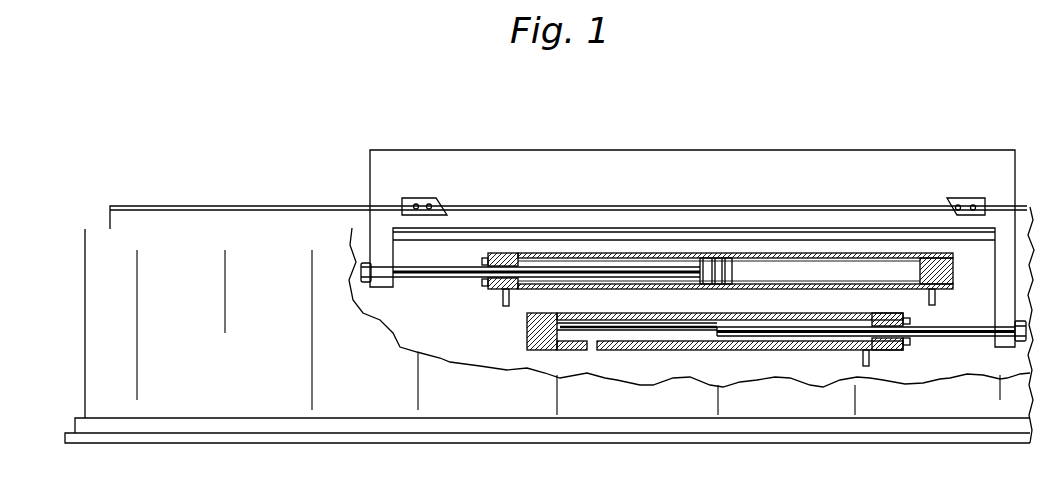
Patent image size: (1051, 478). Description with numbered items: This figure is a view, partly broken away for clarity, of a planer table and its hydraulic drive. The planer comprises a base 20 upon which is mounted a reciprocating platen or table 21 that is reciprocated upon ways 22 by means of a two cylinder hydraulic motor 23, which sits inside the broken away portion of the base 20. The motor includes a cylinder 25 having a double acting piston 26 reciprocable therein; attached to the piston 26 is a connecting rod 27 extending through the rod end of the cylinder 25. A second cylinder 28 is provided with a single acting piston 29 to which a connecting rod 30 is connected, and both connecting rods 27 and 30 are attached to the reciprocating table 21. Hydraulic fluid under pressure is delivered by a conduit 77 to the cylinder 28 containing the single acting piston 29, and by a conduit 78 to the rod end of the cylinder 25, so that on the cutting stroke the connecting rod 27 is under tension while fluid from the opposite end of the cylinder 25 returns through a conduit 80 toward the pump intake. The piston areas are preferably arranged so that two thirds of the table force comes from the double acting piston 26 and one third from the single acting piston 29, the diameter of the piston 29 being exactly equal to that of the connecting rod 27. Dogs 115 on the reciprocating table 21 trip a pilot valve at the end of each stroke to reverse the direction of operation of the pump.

The base 20 is at (90, 296).
The reciprocating platen or table 21 is at (838, 152).
The ways 22 is at (124, 205).
The two cylinder hydraulic motor 23 is at (466, 313).
The cylinder 25 is at (915, 250).
The piston 26 is at (729, 287).
The connecting rod 27 is at (452, 272).
The second cylinder 28 is at (612, 314).
The single acting piston 29 is at (752, 332).
The connecting rod 30 is at (973, 330).
The conduit 77 is at (866, 349).
The conduit 78 is at (511, 301).
The conduit 80 is at (937, 297).
The dogs 115 is at (444, 199).